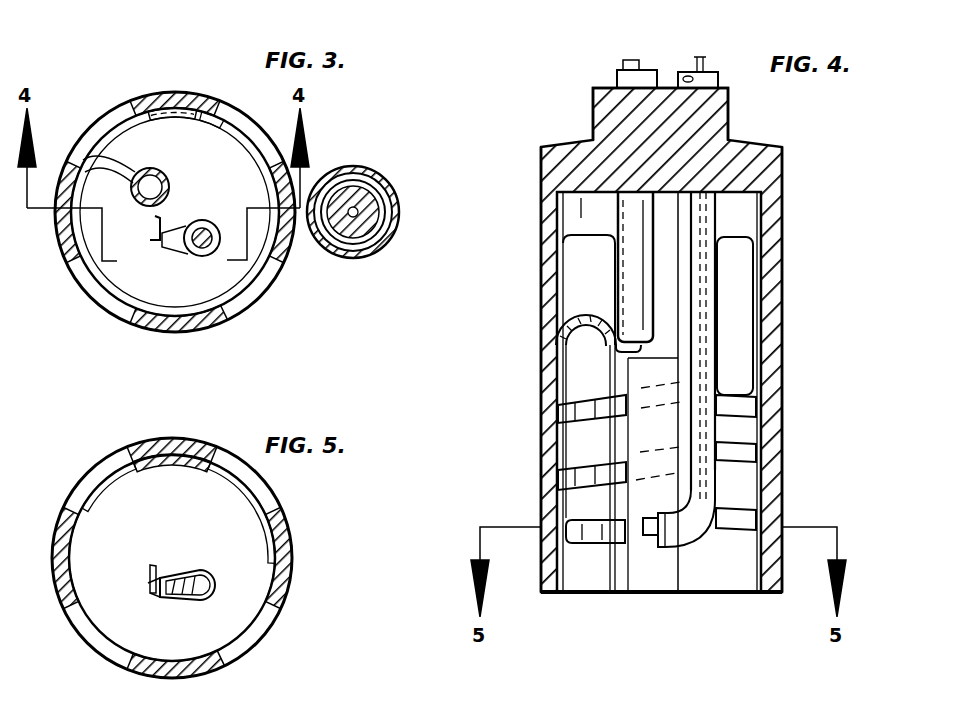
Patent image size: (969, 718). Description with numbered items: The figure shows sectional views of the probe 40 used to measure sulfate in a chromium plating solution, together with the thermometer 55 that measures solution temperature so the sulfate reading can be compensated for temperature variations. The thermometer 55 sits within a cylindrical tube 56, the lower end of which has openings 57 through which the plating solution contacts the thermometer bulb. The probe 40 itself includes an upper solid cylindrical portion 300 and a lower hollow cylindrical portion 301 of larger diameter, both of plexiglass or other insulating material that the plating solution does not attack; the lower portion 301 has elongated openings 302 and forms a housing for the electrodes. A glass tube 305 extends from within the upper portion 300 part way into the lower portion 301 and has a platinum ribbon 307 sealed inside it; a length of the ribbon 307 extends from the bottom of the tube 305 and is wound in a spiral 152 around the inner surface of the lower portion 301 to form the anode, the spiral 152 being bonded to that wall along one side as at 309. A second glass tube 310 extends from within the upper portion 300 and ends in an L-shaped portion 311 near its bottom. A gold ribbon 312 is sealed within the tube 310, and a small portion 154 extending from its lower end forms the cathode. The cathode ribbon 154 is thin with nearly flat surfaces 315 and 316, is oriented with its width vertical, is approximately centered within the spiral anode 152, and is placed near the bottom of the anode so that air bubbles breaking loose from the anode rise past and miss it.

In FIG. 3, the probe 40 is at (152, 338).
In FIG. 5, the probe 40 is at (90, 648).
In FIG. 4, the probe 40 is at (795, 180).
In FIG. 3, the thermometer 55 is at (372, 215).
In FIG. 3, the cylindrical tube 56 is at (382, 192).
In FIG. 3, the openings 57 is at (355, 165).
In FIG. 3, the spiral 152 is at (82, 278).
In FIG. 5, the spiral 152 is at (262, 500).
In FIG. 4, the spiral 152 is at (760, 405).
In FIG. 3, the cathode ribbon 154 is at (152, 240).
In FIG. 5, the cathode ribbon 154 is at (152, 585).
In FIG. 4, the cathode ribbon 154 is at (645, 536).
In FIG. 4, the upper solid cylindrical portion 300 is at (730, 92).
In FIG. 3, the lower hollow cylindrical portion 301 is at (170, 95).
In FIG. 5, the lower hollow cylindrical portion 301 is at (170, 440).
In FIG. 4, the lower hollow cylindrical portion 301 is at (764, 346).
In FIG. 3, the elongated openings 302 is at (118, 113).
In FIG. 5, the elongated openings 302 is at (97, 478).
In FIG. 4, the elongated openings 302 is at (740, 285).
In FIG. 3, the glass tube 305 is at (168, 180).
In FIG. 4, the glass tube 305 is at (630, 236).
In FIG. 3, the platinum ribbon 307 is at (118, 125).
In FIG. 4, the platinum ribbon 307 is at (636, 58).
In FIG. 3, the bond 309 is at (180, 120).
In FIG. 5, the bond 309 is at (180, 472).
In FIG. 3, the second glass tube 310 is at (214, 222).
In FIG. 4, the second glass tube 310 is at (712, 222).
In FIG. 3, the L-shaped portion 311 is at (185, 254).
In FIG. 5, the L-shaped portion 311 is at (195, 575).
In FIG. 4, the L-shaped portion 311 is at (695, 548).
In FIG. 3, the gold ribbon 312 is at (212, 254).
In FIG. 5, the gold ribbon 312 is at (193, 600).
In FIG. 4, the gold ribbon 312 is at (702, 56).
In FIG. 5, the flat surface 315 is at (150, 572).
In FIG. 5, the flat surface 316 is at (160, 566).